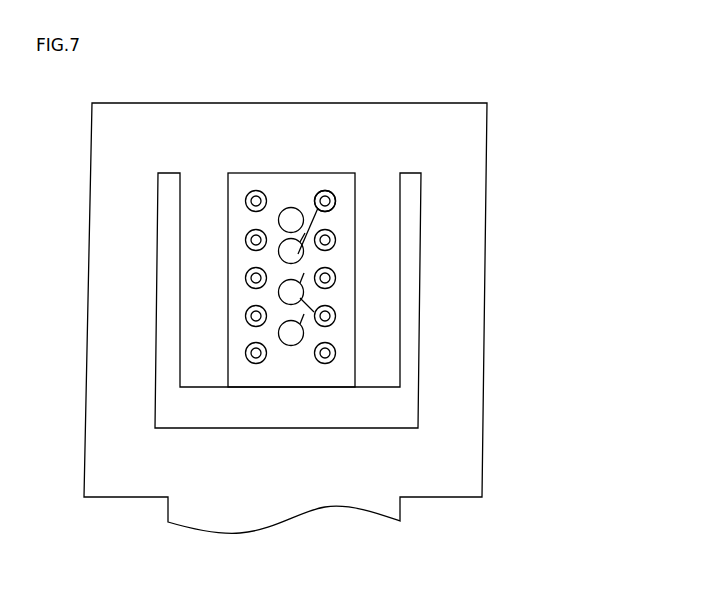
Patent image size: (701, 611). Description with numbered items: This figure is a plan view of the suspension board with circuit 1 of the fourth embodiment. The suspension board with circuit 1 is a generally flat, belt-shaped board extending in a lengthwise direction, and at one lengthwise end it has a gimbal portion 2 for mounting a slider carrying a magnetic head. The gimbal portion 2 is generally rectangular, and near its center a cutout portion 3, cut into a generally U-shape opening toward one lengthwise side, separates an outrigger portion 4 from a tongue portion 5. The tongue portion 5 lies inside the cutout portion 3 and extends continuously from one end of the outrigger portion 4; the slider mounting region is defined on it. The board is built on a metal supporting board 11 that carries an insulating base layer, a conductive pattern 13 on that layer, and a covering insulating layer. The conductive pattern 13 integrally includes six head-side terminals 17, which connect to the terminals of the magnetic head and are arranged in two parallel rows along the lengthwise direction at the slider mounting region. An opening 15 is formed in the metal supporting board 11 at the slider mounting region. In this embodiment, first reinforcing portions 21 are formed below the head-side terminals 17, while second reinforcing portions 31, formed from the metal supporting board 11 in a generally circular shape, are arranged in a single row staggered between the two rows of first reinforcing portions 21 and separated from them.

The suspension board with circuit 1 is at (277, 568).
The metal supporting board 11 is at (420, 122).
The gimbal portion 2 is at (481, 183).
The cutout portion 3 is at (422, 306).
The outrigger portion 4 is at (477, 238).
The tongue portion 5 is at (392, 349).
The conductive pattern 13 is at (291, 283).
The opening 15 is at (332, 196).
The head-side terminal 17 is at (326, 200).
The first reinforcing portion 21 is at (247, 196).
The second reinforcing portion 31 is at (298, 211).